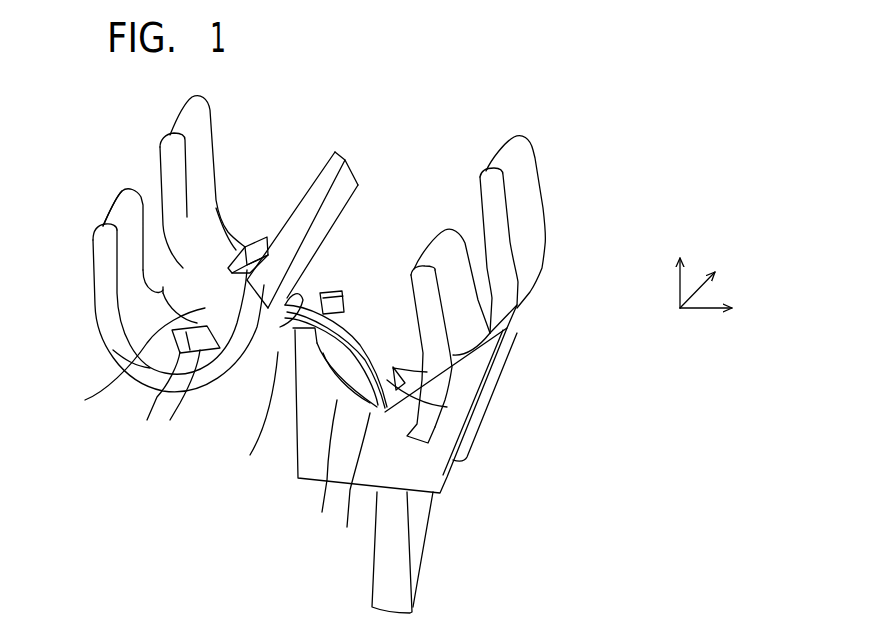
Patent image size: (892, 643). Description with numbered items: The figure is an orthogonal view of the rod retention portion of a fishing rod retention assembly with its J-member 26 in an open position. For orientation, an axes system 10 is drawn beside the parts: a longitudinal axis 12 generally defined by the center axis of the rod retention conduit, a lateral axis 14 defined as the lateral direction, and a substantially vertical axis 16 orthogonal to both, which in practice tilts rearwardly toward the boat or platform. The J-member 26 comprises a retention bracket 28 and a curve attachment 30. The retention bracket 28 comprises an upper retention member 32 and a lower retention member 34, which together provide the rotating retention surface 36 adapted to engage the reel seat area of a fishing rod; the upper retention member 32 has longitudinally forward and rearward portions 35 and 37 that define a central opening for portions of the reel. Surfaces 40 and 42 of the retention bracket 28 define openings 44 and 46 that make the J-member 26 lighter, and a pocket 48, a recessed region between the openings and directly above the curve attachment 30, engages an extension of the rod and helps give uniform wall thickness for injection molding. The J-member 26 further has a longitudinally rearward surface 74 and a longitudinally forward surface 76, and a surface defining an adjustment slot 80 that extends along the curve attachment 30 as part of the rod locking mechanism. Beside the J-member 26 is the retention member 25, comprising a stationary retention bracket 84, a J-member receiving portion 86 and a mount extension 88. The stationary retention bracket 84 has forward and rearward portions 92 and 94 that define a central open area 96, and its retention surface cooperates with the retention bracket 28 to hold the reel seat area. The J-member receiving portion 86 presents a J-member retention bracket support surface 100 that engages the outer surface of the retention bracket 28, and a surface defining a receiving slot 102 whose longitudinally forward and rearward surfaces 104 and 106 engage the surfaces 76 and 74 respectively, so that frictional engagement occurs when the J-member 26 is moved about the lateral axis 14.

The axes system 10 is at (726, 252).
The longitudinal axis 12 is at (697, 297).
The lateral axis 14 is at (700, 310).
The substantially vertical axis 16 is at (680, 287).
The retention member 25 is at (568, 228).
The J-member 26 is at (80, 322).
The retention bracket 28 is at (133, 360).
The curve attachment 30 is at (163, 287).
The upper retention member 32 is at (100, 237).
The lower retention member 34 is at (348, 177).
The longitudinally forward portion 35 is at (180, 118).
The rotating retention surface 36 is at (216, 208).
The longitudinally rearward portion 37 is at (115, 210).
The surface 40 is at (180, 405).
The surface 42 is at (256, 254).
The opening 44 is at (160, 388).
The opening 46 is at (243, 237).
The pocket 48 is at (137, 367).
The longitudinally rearward surface 74 is at (278, 352).
The longitudinally forward surface 76 is at (352, 318).
The adjustment slot 80 is at (366, 347).
The stationary retention bracket 84 is at (523, 193).
The J-member receiving portion 86 is at (347, 527).
The mount extension 88 is at (418, 567).
The forward portion 92 is at (527, 160).
The rearward portion 94 is at (453, 355).
The central open area 96 is at (480, 267).
The J-member retention bracket support surface 100 is at (457, 443).
The receiving slot 102 is at (400, 353).
The longitudinally forward surface 104 is at (410, 405).
The longitudinally rearward surface 106 is at (326, 503).